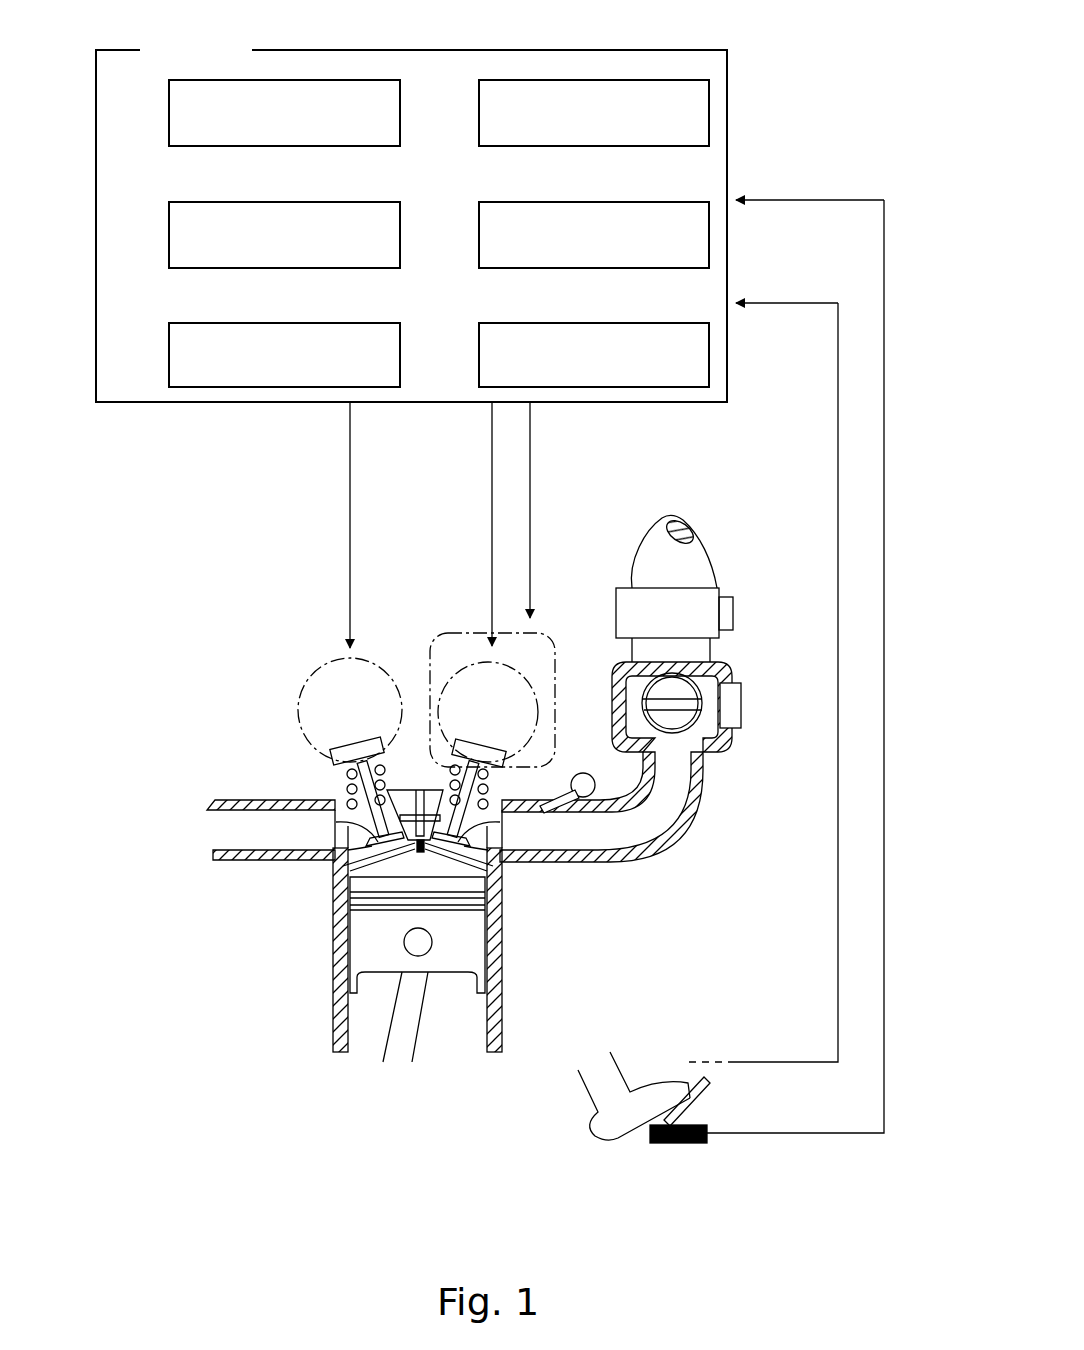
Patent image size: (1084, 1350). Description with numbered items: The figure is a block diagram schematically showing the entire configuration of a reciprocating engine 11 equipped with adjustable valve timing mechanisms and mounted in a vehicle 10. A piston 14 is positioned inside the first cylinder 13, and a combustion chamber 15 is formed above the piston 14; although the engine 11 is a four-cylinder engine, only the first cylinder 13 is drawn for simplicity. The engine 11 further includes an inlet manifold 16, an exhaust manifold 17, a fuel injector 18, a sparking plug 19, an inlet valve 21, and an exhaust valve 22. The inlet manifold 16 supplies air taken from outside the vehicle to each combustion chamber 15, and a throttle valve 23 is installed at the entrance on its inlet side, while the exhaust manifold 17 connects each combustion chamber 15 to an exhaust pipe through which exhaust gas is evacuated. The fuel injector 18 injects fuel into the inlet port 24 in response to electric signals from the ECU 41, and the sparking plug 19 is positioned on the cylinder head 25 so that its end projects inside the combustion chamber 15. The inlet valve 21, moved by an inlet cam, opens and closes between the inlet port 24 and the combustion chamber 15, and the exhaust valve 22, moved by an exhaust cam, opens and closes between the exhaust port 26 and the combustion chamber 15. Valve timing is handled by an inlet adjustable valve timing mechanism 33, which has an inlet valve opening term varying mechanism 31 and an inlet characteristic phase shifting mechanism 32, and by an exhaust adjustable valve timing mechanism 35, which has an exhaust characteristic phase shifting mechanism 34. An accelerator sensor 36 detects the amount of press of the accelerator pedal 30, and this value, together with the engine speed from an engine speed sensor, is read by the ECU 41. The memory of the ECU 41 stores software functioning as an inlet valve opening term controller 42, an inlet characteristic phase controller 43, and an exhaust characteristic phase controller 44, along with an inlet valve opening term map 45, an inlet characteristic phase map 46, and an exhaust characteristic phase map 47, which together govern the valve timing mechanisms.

The vehicle 10 is at (806, 22).
The reciprocating engine 11 is at (222, 1047).
The first cylinder 13 is at (484, 1024).
The piston 14 is at (470, 944).
The combustion chamber 15 is at (413, 862).
The inlet manifold 16 is at (655, 835).
The exhaust manifold 17 is at (228, 800).
The fuel injector 18 is at (590, 773).
The sparking plug 19 is at (417, 790).
The inlet valve 21 is at (492, 882).
The exhaust valve 22 is at (345, 882).
The throttle valve 23 is at (690, 722).
The inlet port 24 is at (504, 826).
The cylinder head 25 is at (350, 800).
The exhaust port 26 is at (347, 830).
The accelerator pedal 30 is at (712, 1090).
The inlet valve opening term varying mechanism 31 is at (470, 640).
The inlet characteristic phase shifting mechanism 32 is at (452, 685).
The inlet adjustable valve timing mechanism 33 is at (400, 563).
The exhaust characteristic phase shifting mechanism 34 is at (312, 686).
The exhaust adjustable valve timing mechanism 35 is at (298, 578).
The accelerator sensor 36 is at (685, 1143).
The ECU 41 is at (411, 343).
The inlet valve opening term controller 42 is at (169, 118).
The inlet characteristic phase controller 43 is at (169, 240).
The exhaust characteristic phase controller 44 is at (169, 360).
The inlet valve opening term map 45 is at (479, 113).
The inlet characteristic phase map 46 is at (479, 236).
The exhaust characteristic phase map 47 is at (479, 360).